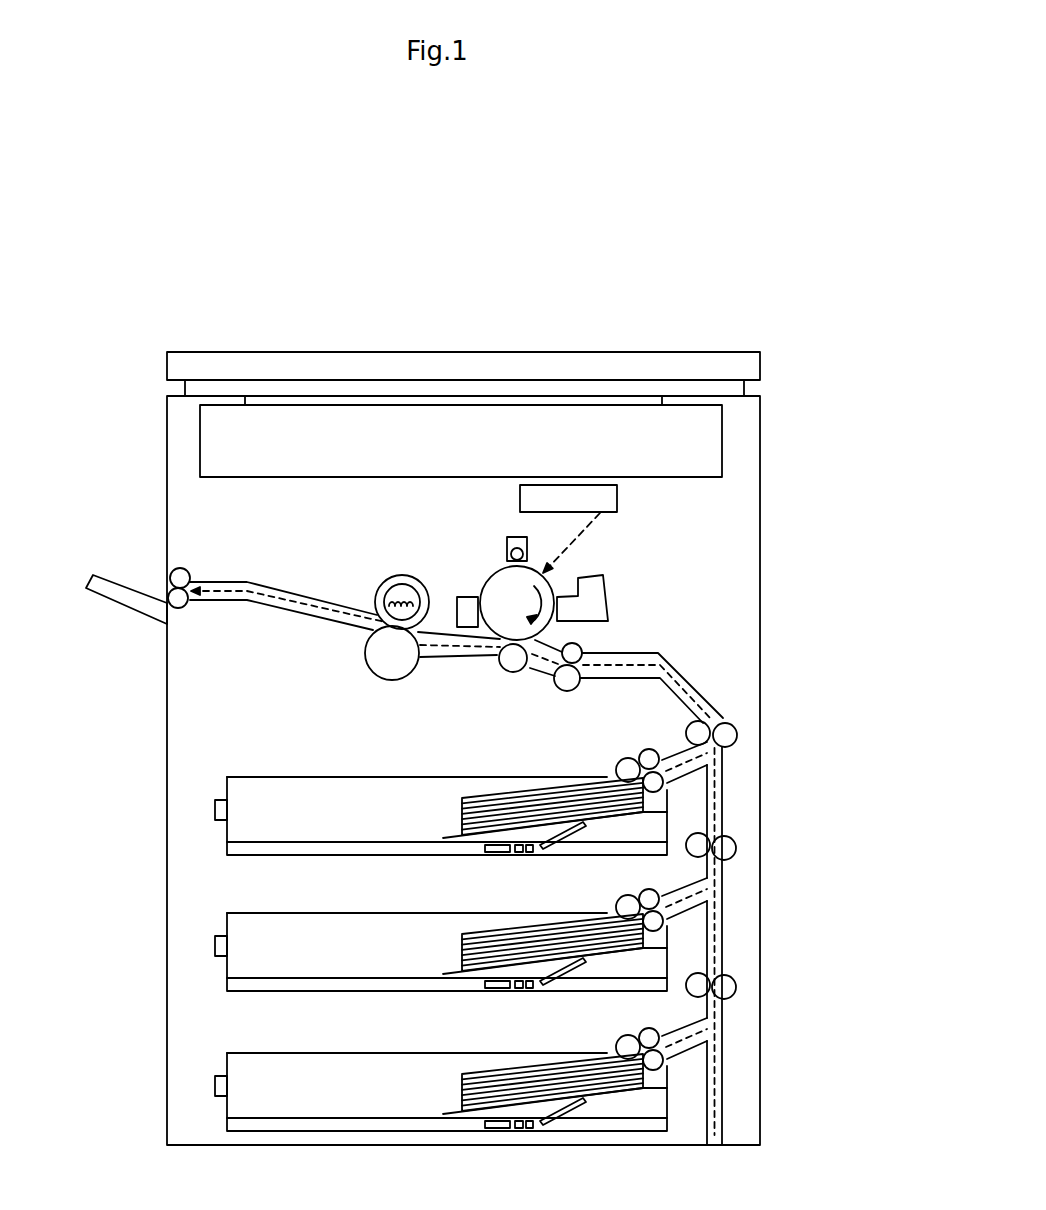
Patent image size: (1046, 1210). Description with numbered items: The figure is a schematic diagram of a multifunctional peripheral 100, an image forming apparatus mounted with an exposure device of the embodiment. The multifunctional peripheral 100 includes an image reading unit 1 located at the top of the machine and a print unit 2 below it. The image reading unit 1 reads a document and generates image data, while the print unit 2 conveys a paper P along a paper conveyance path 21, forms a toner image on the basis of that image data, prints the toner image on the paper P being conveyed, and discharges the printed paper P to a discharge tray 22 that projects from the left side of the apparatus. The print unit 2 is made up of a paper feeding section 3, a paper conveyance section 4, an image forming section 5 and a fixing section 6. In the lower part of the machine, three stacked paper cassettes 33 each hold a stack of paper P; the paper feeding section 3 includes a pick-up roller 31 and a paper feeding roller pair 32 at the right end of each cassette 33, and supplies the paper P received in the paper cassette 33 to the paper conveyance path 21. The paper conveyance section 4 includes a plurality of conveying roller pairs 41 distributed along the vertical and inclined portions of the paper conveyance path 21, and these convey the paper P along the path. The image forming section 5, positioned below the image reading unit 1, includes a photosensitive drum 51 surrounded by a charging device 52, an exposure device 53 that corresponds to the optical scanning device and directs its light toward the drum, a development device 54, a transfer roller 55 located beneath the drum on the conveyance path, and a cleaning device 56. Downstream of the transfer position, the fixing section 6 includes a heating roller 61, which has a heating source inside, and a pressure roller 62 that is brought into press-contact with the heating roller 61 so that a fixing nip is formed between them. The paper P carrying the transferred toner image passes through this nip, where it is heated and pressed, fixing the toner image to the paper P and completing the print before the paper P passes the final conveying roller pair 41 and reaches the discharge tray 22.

The multifunctional peripheral 100 is at (185, 325).
The image reading unit 1 is at (732, 437).
The print unit 2 is at (728, 580).
The discharge tray 22 is at (95, 573).
The image forming section 5 is at (622, 580).
The photosensitive drum 51 is at (495, 567).
The charging device 52 is at (512, 535).
The exposure device 53 is at (617, 498).
The development device 54 is at (590, 575).
The transfer roller 55 is at (510, 672).
The cleaning device 56 is at (467, 597).
The fixing section 6 is at (347, 656).
The heating roller 61 is at (402, 575).
The pressure roller 62 is at (392, 680).
The paper conveyance section 4 is at (734, 710).
The paper conveyance path 21 is at (672, 672).
The conveying roller pairs 41 is at (183, 565).
The paper feeding section 3 is at (600, 762).
The paper cassette 33 is at (341, 777).
The paper P is at (465, 798).
The pick-up roller 31 is at (627, 758).
The paper feeding roller pair 32 is at (648, 748).